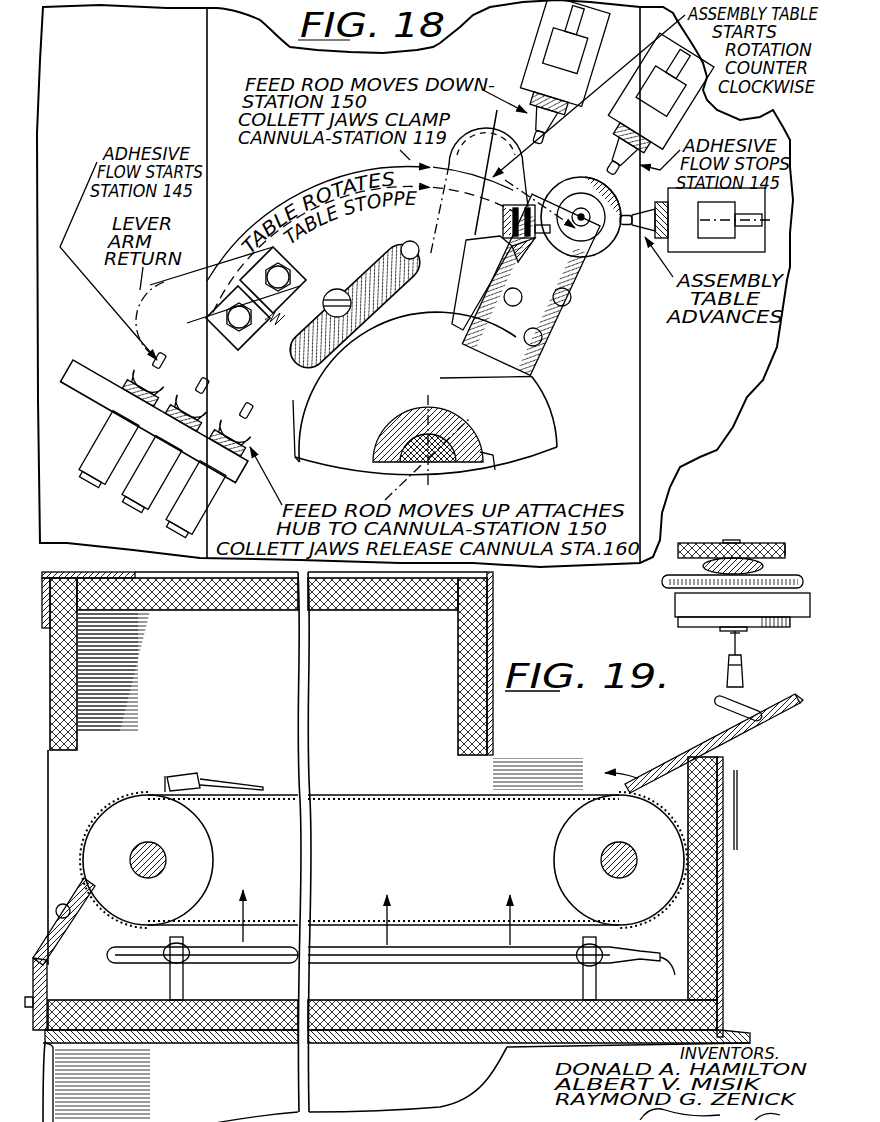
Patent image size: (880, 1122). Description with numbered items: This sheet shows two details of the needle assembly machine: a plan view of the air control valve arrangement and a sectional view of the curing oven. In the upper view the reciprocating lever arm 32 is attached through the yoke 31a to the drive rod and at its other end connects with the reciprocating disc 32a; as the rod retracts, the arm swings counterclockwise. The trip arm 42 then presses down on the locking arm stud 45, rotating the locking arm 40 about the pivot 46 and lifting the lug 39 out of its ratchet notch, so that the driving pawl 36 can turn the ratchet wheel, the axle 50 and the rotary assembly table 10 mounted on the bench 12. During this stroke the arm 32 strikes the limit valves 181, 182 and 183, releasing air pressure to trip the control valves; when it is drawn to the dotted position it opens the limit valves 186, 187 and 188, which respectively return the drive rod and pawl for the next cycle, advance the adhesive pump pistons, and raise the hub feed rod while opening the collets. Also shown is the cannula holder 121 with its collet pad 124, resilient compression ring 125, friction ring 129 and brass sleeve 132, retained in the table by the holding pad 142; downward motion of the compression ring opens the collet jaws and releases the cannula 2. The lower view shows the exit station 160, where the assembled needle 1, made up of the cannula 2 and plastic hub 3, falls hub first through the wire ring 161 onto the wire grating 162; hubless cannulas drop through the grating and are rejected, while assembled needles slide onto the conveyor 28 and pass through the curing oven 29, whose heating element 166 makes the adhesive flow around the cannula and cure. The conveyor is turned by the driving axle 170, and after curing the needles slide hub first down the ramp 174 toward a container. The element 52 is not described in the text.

In FIG. 19, the needle 1 is at (210, 773).
In FIG. 19, the cannula 2 is at (240, 780).
In FIG. 19, the hub 3 is at (180, 777).
In FIG. 19, the rotary assembly table 10 is at (803, 617).
In FIG. 19, the bench 12 is at (233, 1040).
In FIG. 19, the conveyor 28 is at (352, 793).
In FIG. 19, the curing oven 29 is at (447, 643).
In FIG. 18, the yoke 31a is at (575, 197).
In FIG. 18, the lever arm 32 is at (575, 300).
In FIG. 18, the reciprocating disc 32a is at (523, 410).
In FIG. 18, the driving pawl 36 is at (456, 320).
In FIG. 18, the lug 39 is at (292, 420).
In FIG. 18, the locking arm 40 is at (358, 272).
In FIG. 18, the trip arm 42 is at (472, 232).
In FIG. 18, the locking arm stud 45 is at (407, 244).
In FIG. 18, the pivot 46 is at (340, 312).
In FIG. 18, the axle 50 is at (490, 462).
In FIG. 18, the table hub 52 is at (432, 474).
In FIG. 19, the cannula holder 121 is at (813, 562).
In FIG. 19, the collet pad 124 is at (793, 525).
In FIG. 19, the resilient compression ring 125 is at (703, 565).
In FIG. 19, the resilient circumferential friction ring 129 is at (662, 582).
In FIG. 19, the brass sleeve 132 is at (735, 540).
In FIG. 19, the holding pad 142 is at (707, 618).
In FIG. 19, the exit station 160 is at (675, 603).
In FIG. 19, the wire ring 161 is at (770, 693).
In FIG. 19, the wire grating 162 is at (740, 738).
In FIG. 19, the heating element 166 is at (437, 963).
In FIG. 19, the driving axle 170 is at (162, 856).
In FIG. 19, the ramp 174 is at (68, 920).
In FIG. 18, the limit valve 181 is at (640, 233).
In FIG. 18, the limit valve 182 is at (607, 155).
In FIG. 18, the limit valve 183 is at (530, 133).
In FIG. 18, the limit valve 186 is at (150, 400).
In FIG. 18, the limit valve 187 is at (143, 358).
In FIG. 18, the limit valve 188 is at (253, 437).